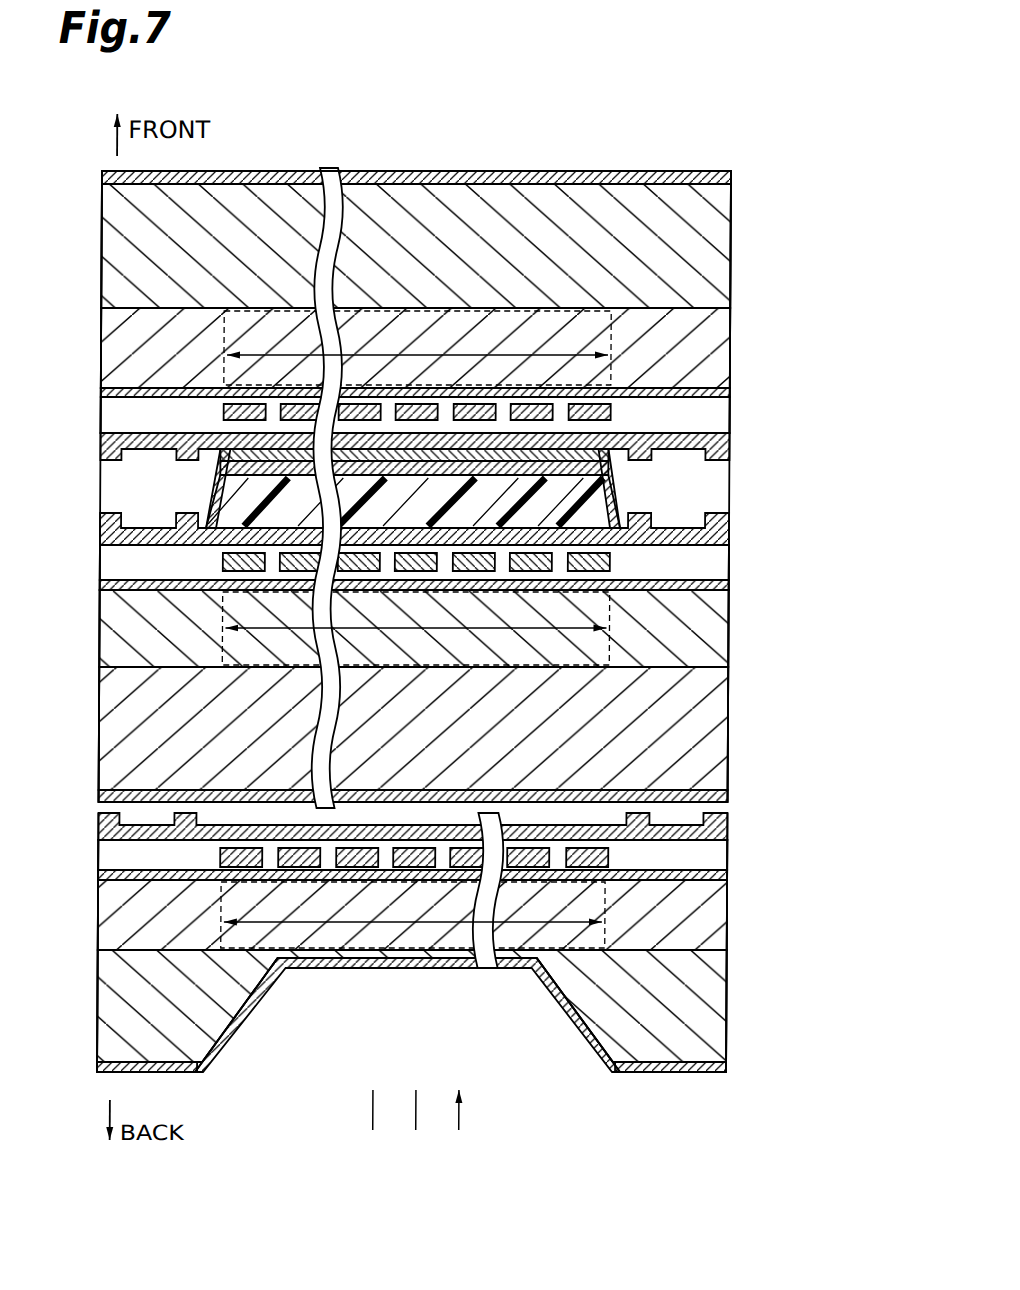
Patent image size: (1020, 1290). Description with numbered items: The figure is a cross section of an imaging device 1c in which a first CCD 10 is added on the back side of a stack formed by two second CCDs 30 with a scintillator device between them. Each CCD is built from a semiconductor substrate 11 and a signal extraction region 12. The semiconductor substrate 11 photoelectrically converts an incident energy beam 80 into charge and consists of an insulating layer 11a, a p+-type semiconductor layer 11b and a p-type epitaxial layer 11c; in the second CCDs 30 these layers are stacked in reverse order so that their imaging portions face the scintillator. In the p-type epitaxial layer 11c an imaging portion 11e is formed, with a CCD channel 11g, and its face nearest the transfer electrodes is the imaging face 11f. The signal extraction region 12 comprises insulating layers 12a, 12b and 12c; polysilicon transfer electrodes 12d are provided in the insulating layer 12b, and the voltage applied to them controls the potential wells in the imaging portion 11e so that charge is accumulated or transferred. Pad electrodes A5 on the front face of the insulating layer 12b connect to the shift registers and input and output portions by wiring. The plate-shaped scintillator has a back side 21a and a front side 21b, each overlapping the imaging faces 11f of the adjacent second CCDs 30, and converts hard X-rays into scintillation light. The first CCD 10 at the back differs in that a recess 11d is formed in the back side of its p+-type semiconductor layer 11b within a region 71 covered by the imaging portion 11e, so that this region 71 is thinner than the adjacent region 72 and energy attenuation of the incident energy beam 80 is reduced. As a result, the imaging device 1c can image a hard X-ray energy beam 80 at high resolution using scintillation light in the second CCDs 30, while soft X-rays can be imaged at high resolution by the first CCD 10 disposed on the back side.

The imaging device 1c is at (816, 112).
The first CCD 10 is at (843, 833).
The second CCD 30 is at (843, 235).
The semiconductor substrate 11 is at (799, 156).
The insulating layer 11a is at (734, 184).
The p+-type semiconductor layer 11b is at (727, 272).
The p-type epitaxial layer 11c is at (730, 350).
The recess 11d is at (566, 1052).
The imaging portion 11e is at (223, 346).
The imaging face 11f is at (376, 473).
The CCD channel 11g is at (378, 470).
The signal extraction region 12 is at (799, 378).
The insulating layer 12a is at (730, 393).
The insulating layer 12b is at (723, 418).
The insulating layer 12c is at (650, 458).
The transfer electrodes 12d is at (614, 420).
The back side 21a is at (227, 568).
The front side 21b is at (263, 462).
The region 71 is at (405, 968).
The region 72 is at (690, 1054).
The incident energy beam 80 is at (421, 1112).
The pad electrodes A5 is at (688, 445).